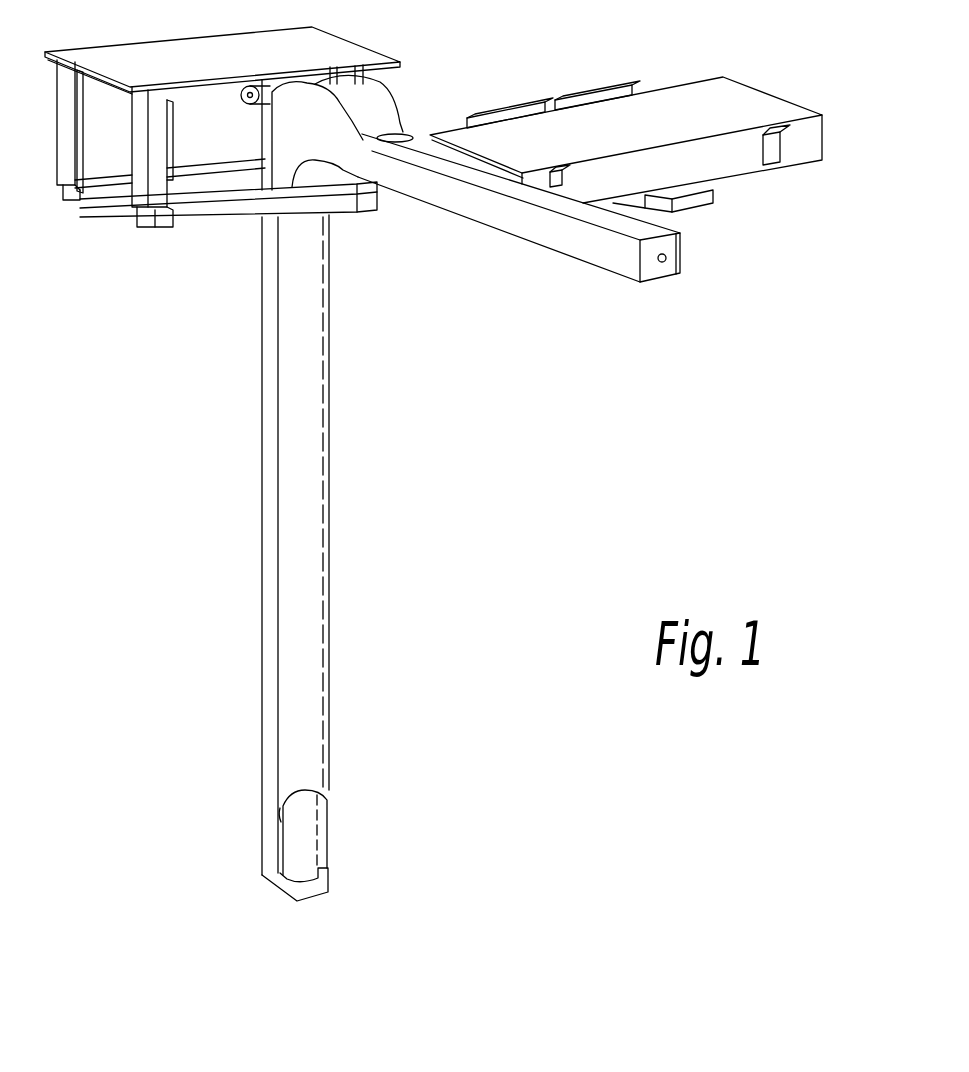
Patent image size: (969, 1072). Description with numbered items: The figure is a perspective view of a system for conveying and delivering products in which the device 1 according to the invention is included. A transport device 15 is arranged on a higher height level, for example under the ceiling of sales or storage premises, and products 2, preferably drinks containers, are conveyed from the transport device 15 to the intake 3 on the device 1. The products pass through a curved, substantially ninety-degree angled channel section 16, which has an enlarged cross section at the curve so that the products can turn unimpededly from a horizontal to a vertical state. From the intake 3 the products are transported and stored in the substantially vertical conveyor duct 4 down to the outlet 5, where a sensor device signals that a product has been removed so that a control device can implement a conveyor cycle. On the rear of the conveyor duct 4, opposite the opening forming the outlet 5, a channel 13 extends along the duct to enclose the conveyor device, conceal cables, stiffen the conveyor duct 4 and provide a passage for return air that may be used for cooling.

The device 1 is at (215, 310).
The products 2 is at (310, 845).
The intake 3 is at (403, 128).
The conveyor duct 4 is at (315, 410).
The outlet 5 is at (325, 797).
The channel 13 is at (268, 550).
The transport device 15 is at (455, 198).
The channel section 16 is at (388, 100).